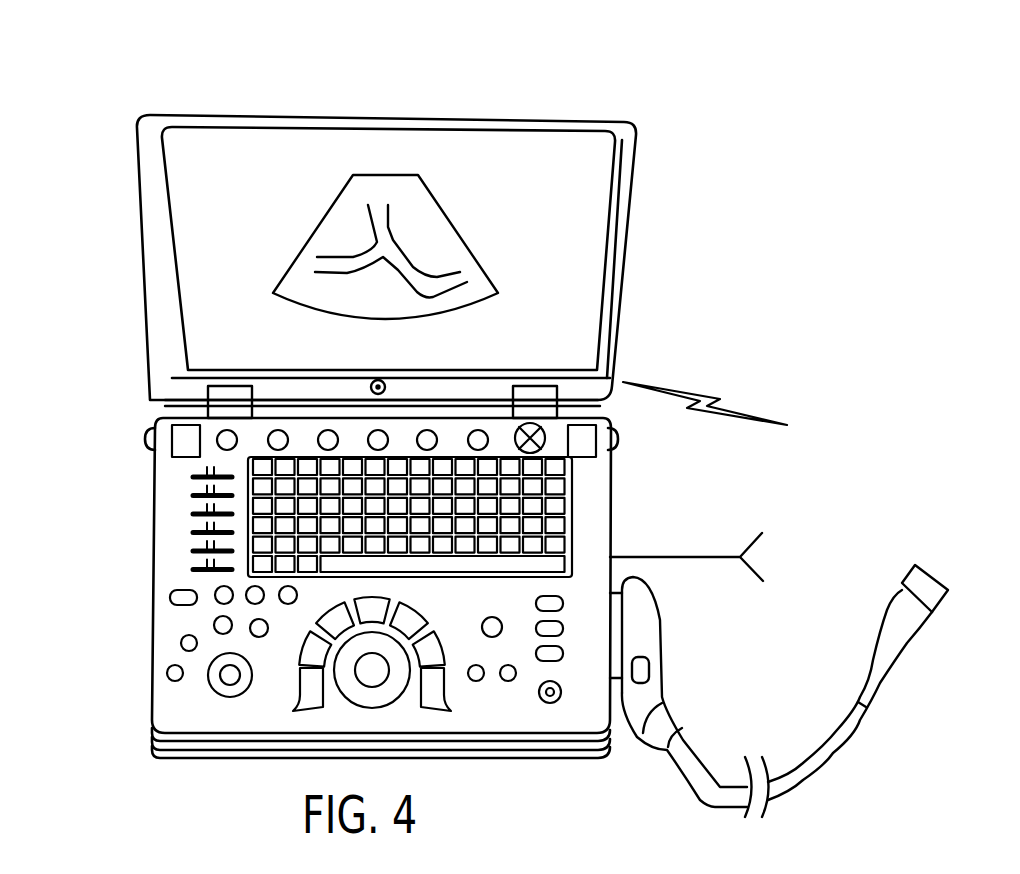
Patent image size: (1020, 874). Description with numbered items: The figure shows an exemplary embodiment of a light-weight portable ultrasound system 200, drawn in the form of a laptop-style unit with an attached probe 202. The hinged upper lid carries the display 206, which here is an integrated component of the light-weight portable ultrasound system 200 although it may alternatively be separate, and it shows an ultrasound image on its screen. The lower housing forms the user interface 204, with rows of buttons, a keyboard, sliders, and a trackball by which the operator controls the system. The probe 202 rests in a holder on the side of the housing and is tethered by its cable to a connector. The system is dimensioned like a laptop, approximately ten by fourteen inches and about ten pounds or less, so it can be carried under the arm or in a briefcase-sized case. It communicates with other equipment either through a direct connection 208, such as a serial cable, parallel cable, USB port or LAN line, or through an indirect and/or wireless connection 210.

The light-weight portable ultrasound system 200 is at (341, 394).
The probe 202 is at (835, 768).
The user interface 204 is at (150, 449).
The display 206 is at (127, 115).
The direct connection 208 is at (689, 557).
The indirect and/or wireless connection 210 is at (676, 392).